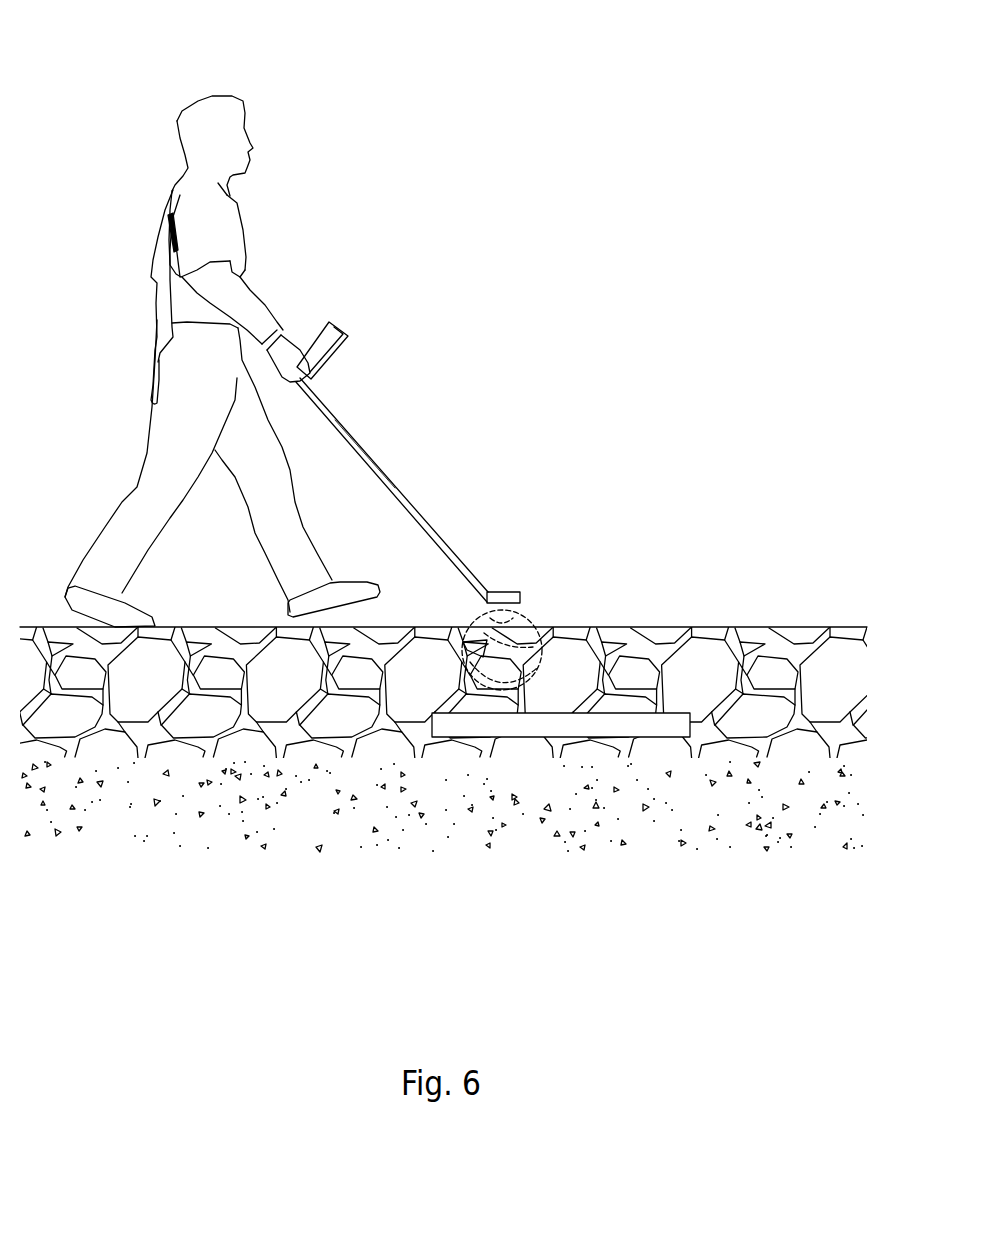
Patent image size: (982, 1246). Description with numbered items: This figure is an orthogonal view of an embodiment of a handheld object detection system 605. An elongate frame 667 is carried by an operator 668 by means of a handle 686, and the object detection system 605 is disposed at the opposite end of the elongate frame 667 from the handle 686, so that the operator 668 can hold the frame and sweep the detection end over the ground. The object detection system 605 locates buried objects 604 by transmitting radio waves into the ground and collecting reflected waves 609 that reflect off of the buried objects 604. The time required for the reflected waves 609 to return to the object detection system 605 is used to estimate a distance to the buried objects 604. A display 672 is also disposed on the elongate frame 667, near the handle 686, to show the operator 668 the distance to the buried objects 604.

The operator 668 is at (187, 243).
The handle 686 is at (277, 330).
The display 672 is at (337, 345).
The elongate frame 667 is at (397, 485).
The handheld object detection system 605 is at (520, 603).
The buried objects 604 is at (650, 727).
The reflected waves 609 is at (461, 654).